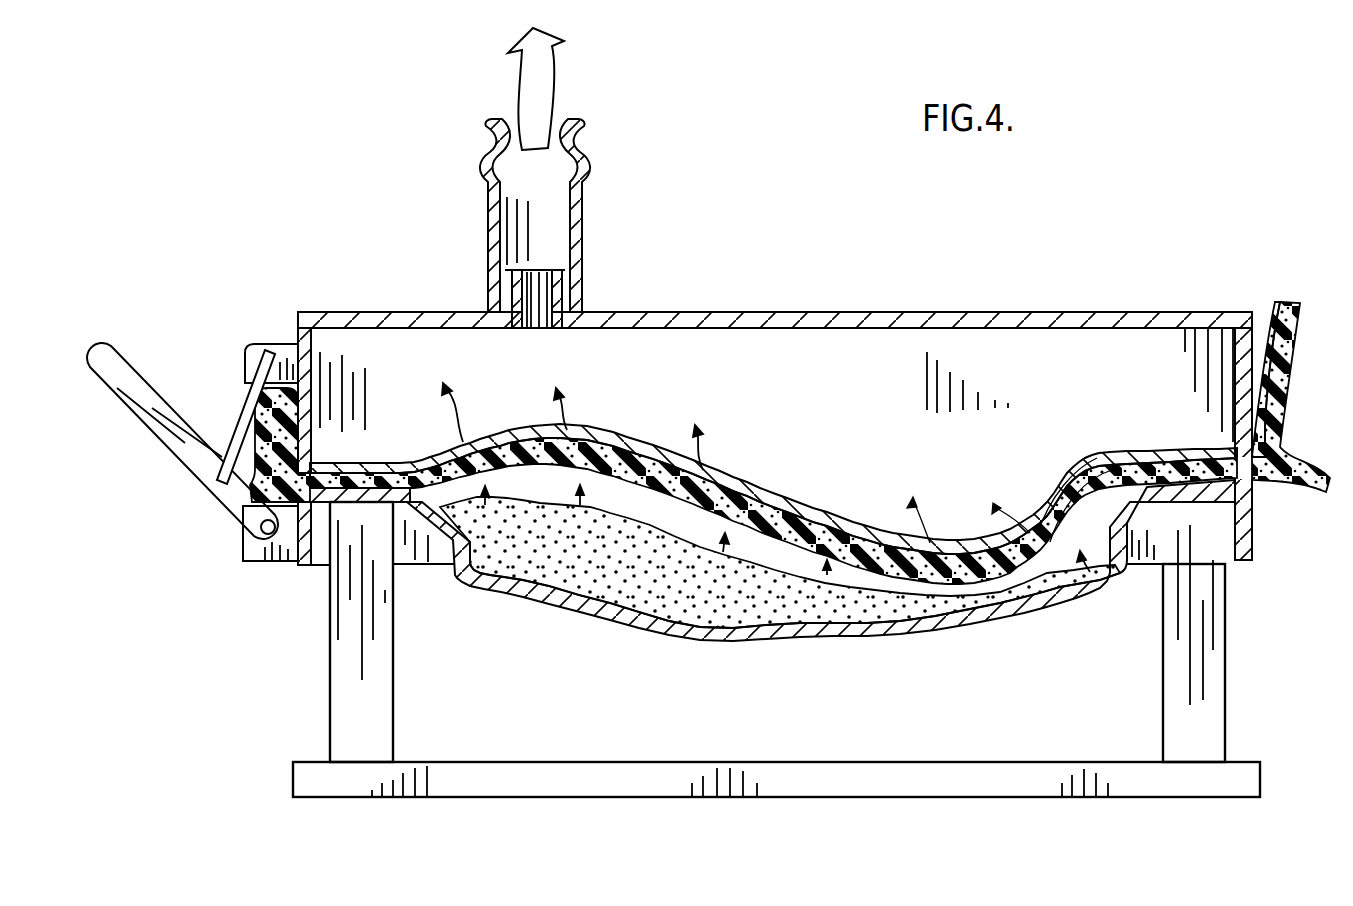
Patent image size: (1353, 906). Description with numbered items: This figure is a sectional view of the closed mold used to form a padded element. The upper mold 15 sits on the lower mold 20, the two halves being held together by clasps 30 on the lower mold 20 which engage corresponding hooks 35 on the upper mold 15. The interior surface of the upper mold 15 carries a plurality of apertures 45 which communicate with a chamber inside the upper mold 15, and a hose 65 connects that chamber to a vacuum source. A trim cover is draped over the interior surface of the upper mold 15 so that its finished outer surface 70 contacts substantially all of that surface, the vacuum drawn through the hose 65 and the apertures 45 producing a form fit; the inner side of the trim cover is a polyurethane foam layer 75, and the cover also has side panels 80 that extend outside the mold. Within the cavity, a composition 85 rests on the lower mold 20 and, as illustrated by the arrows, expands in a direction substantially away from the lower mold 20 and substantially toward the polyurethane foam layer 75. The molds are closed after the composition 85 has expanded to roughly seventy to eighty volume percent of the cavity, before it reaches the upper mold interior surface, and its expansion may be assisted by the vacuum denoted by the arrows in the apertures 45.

The upper mold 15 is at (1010, 318).
The lower mold 20 is at (943, 627).
The clasp 30 is at (137, 390).
The hook 35 is at (243, 352).
The apertures 45 is at (820, 510).
The hose 65 is at (553, 225).
The finished outer surface 70 is at (958, 540).
The polyurethane foam layer 75 is at (838, 533).
The side panels 80 is at (227, 483).
The composition 85 is at (743, 607).